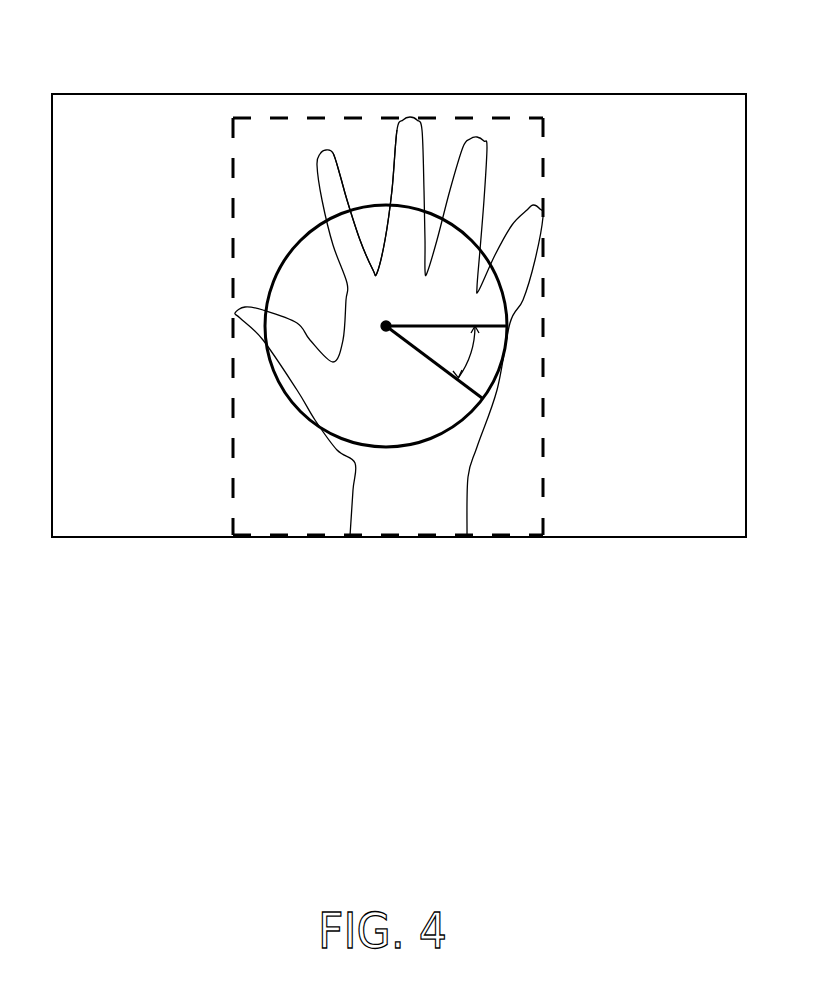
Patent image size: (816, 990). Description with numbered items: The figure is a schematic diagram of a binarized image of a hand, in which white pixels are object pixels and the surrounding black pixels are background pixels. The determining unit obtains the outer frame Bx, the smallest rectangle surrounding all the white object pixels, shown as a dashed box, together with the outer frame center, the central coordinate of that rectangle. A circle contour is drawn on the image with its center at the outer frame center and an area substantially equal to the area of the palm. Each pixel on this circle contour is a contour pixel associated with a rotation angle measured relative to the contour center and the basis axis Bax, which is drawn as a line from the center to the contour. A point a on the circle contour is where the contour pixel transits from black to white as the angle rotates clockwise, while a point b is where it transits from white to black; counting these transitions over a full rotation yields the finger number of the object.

The point a is at (325, 226).
The point b is at (361, 228).
The outer frame Bx is at (388, 118).
The basis axis Bax is at (430, 322).